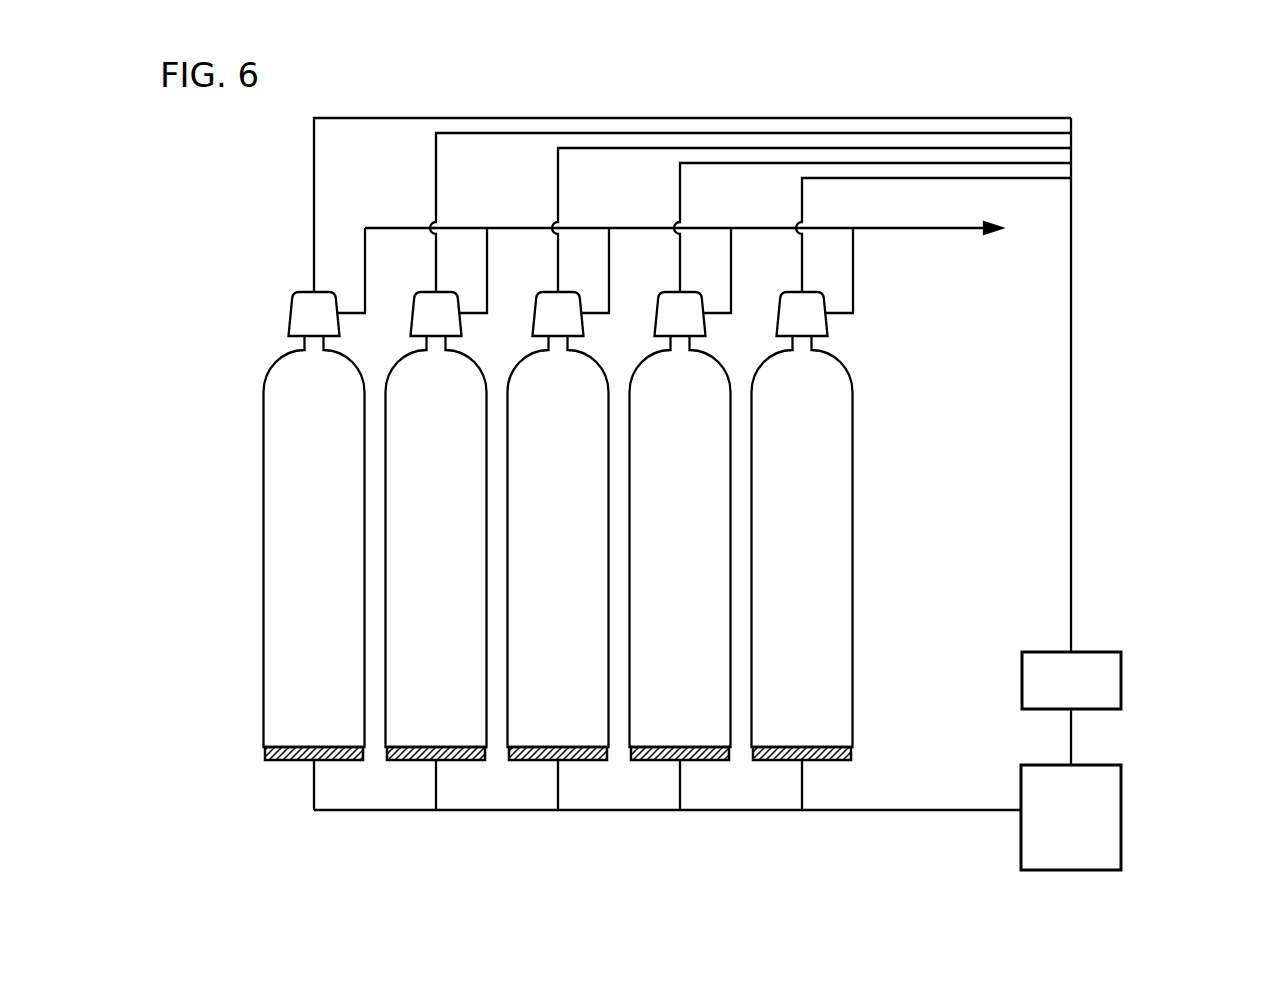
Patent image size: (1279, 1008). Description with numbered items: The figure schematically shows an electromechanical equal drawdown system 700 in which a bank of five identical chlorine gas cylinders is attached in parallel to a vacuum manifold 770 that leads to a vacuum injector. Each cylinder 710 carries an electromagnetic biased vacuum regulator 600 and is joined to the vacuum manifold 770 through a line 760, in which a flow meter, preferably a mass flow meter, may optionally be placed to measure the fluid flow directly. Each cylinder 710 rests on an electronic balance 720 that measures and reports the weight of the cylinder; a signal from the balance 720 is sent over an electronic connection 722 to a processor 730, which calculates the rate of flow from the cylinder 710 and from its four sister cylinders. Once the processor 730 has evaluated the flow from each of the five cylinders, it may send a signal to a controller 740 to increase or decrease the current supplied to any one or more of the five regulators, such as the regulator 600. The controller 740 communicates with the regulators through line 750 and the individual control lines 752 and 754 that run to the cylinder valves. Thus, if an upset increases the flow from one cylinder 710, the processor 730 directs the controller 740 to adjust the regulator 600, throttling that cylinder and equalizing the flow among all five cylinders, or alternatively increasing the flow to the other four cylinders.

The gas supply system 700 is at (1196, 144).
The regulator 600 is at (812, 322).
The cylinder 710 is at (820, 487).
The balance 720 is at (828, 762).
The electronic connection 722 is at (802, 778).
The processor 730 is at (1052, 827).
The controller 740 is at (1052, 693).
The line 750 is at (1071, 432).
The line 752 is at (843, 180).
The control line 754 is at (705, 165).
The line 760 is at (855, 270).
The vacuum manifold 770 is at (933, 231).